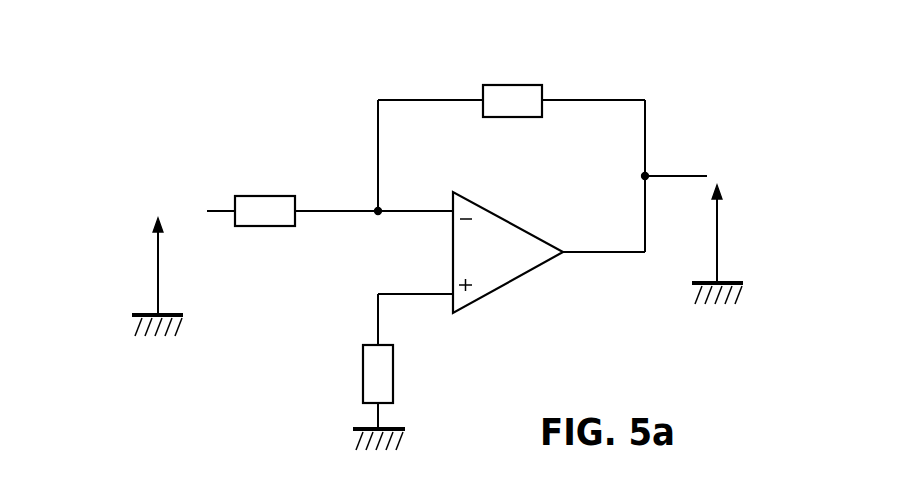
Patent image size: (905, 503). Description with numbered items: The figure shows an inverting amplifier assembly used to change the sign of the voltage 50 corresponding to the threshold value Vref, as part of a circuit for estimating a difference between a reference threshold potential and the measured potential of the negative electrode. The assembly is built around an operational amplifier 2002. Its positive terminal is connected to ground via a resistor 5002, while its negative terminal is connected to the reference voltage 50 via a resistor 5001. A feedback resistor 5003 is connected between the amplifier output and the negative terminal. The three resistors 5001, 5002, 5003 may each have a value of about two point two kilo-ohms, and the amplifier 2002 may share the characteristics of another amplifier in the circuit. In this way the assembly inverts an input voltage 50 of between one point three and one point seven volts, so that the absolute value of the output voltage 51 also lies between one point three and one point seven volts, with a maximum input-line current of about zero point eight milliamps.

The reference voltage 50 is at (75, 218).
The output voltage 51 is at (753, 162).
The resistor 5001 is at (263, 195).
The resistor 5002 is at (363, 386).
The feedback resistor 5003 is at (528, 83).
The operational amplifier 2002 is at (508, 283).